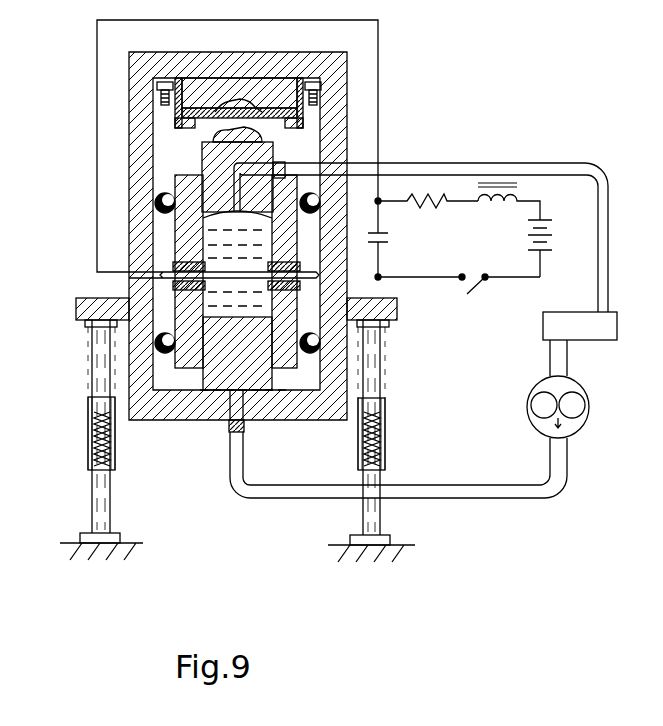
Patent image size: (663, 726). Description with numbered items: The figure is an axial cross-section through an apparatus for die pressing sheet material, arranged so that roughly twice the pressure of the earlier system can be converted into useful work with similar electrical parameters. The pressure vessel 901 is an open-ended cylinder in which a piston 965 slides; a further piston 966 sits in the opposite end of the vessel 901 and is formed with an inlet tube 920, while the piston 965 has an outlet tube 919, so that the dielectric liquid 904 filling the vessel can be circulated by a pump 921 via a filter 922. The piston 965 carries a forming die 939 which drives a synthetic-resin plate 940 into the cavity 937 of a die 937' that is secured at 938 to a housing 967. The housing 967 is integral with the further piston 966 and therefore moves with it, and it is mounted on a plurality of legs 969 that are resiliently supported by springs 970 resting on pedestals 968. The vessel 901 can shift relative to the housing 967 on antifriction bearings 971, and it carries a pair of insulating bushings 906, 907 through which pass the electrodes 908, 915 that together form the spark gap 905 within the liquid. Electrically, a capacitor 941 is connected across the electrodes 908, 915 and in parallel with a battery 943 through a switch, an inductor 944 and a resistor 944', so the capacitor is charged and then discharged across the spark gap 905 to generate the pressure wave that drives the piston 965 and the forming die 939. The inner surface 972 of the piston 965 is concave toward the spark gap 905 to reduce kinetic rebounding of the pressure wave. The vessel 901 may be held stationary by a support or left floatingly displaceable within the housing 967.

The pressure vessel 901 is at (150, 422).
The dielectric liquid 904 is at (274, 379).
The spark gap 905 is at (240, 276).
The insulating bushing 906 is at (172, 263).
The insulating bushing 907 is at (92, 440).
The electrode 908 is at (318, 272).
The electrode 915 is at (165, 279).
The outlet tube 919 is at (418, 164).
The inlet tube 920 is at (230, 436).
The pump 921 is at (572, 440).
The filter 922 is at (590, 341).
The cavity 937 is at (239, 77).
The die 937' is at (262, 77).
The securing means 938 is at (172, 106).
The forming die 939 is at (210, 146).
The synthetic-resin plate 940 is at (268, 108).
The capacitor 941 is at (386, 243).
The battery 943 is at (540, 262).
The inductor 944 is at (528, 201).
The resistor 944' is at (429, 222).
The piston 965 is at (205, 169).
The further piston 966 is at (250, 322).
The housing 967 is at (278, 423).
The pedestal 968 is at (92, 498).
The leg 969 is at (92, 368).
The spring 970 is at (385, 440).
The antifriction bearing 971 is at (156, 344).
The inner surface 972 is at (205, 229).